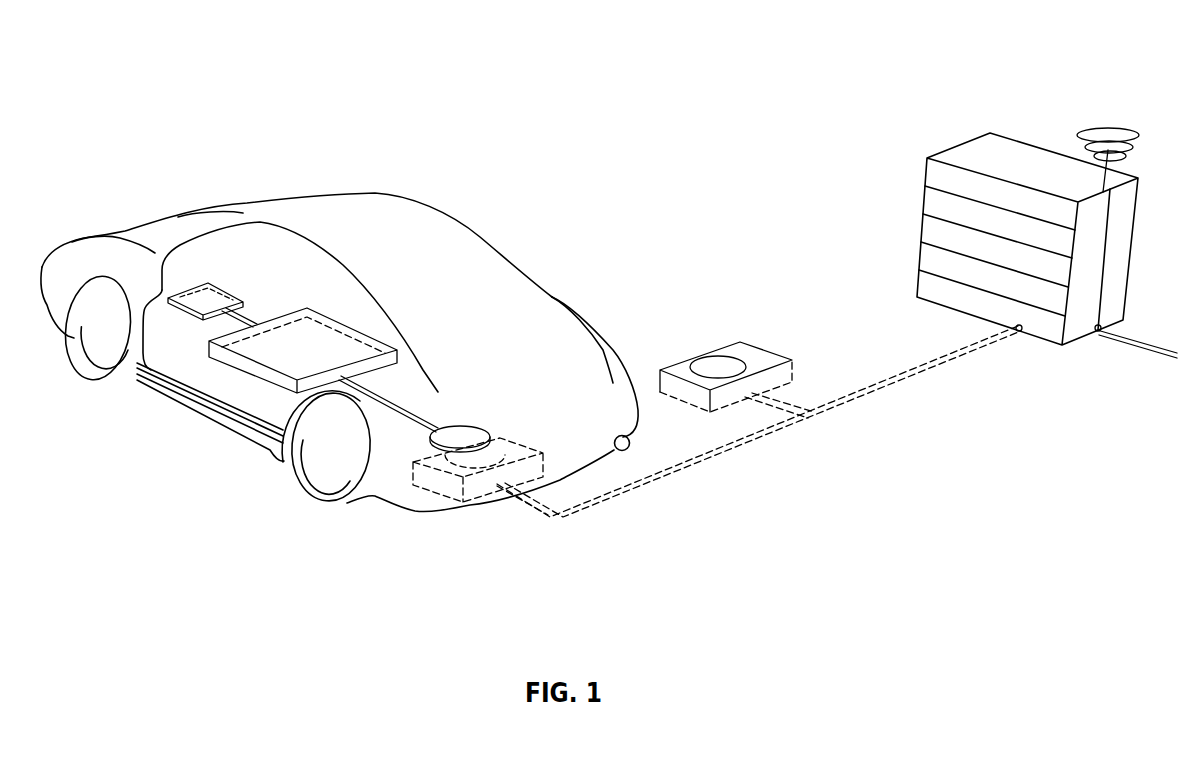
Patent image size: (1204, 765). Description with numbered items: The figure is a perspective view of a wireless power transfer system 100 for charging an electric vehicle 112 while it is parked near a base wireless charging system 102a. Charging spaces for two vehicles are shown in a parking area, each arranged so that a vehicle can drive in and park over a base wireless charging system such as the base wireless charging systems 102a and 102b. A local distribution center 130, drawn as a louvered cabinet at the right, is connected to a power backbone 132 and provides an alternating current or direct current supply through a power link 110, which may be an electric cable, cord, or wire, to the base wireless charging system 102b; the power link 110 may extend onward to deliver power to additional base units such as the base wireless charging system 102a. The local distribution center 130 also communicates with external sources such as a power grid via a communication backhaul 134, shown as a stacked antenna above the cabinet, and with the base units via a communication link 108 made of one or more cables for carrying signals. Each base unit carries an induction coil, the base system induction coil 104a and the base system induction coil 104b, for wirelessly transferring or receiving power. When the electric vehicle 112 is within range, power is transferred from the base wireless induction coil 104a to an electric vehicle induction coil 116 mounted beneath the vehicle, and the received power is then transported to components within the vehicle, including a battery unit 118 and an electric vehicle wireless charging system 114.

The wireless power transfer system 100 is at (333, 58).
The base wireless charging system 102a is at (430, 457).
The base wireless charging system 102b is at (680, 359).
The base system induction coil 104a is at (527, 416).
The base system induction coil 104b is at (727, 357).
The communication link 108 is at (906, 370).
The power link 110 is at (900, 383).
The electric vehicle 112 is at (148, 225).
The electric vehicle wireless charging system 114 is at (216, 340).
The electric vehicle induction coil 116 is at (463, 429).
The battery unit 118 is at (227, 286).
The local distribution center 130 is at (958, 152).
The power backbone 132 is at (1147, 354).
The communication backhaul 134 is at (1108, 128).